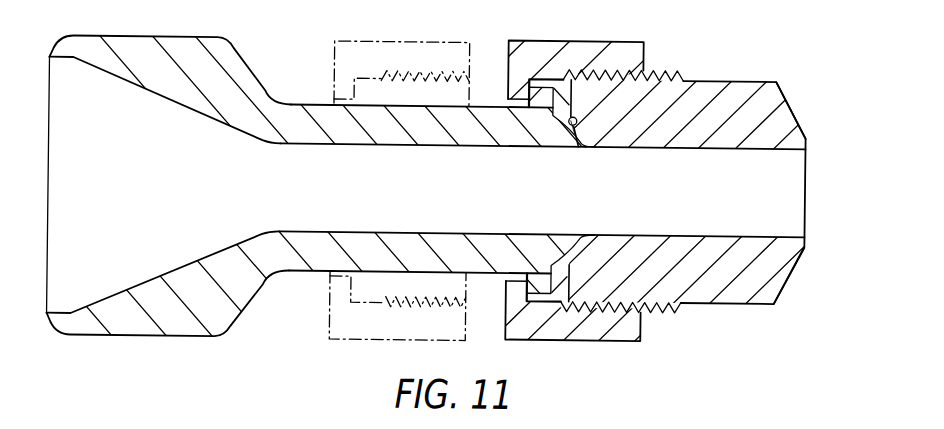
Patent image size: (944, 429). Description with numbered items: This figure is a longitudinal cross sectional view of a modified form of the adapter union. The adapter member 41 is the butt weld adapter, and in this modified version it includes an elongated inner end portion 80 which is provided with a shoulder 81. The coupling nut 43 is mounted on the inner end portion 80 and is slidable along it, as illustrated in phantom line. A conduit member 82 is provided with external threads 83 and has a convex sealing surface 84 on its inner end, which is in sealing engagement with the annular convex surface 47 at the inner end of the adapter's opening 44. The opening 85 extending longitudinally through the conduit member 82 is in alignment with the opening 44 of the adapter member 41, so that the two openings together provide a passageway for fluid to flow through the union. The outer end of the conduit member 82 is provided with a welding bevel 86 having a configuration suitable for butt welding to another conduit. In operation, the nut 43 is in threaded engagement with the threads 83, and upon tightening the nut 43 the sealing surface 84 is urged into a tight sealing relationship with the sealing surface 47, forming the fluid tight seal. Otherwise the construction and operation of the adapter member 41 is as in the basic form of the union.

The adapter member 41 is at (150, 40).
The coupling nut 43 is at (370, 50).
The opening 44 is at (562, 191).
The annular convex surface 47 is at (571, 125).
The elongated inner end portion 80 is at (380, 258).
The shoulder 81 is at (533, 287).
The conduit member 82 is at (737, 86).
The external threads 83 is at (667, 307).
The convex sealing surface 84 is at (580, 235).
The opening 85 is at (693, 230).
The welding bevel 86 is at (793, 113).